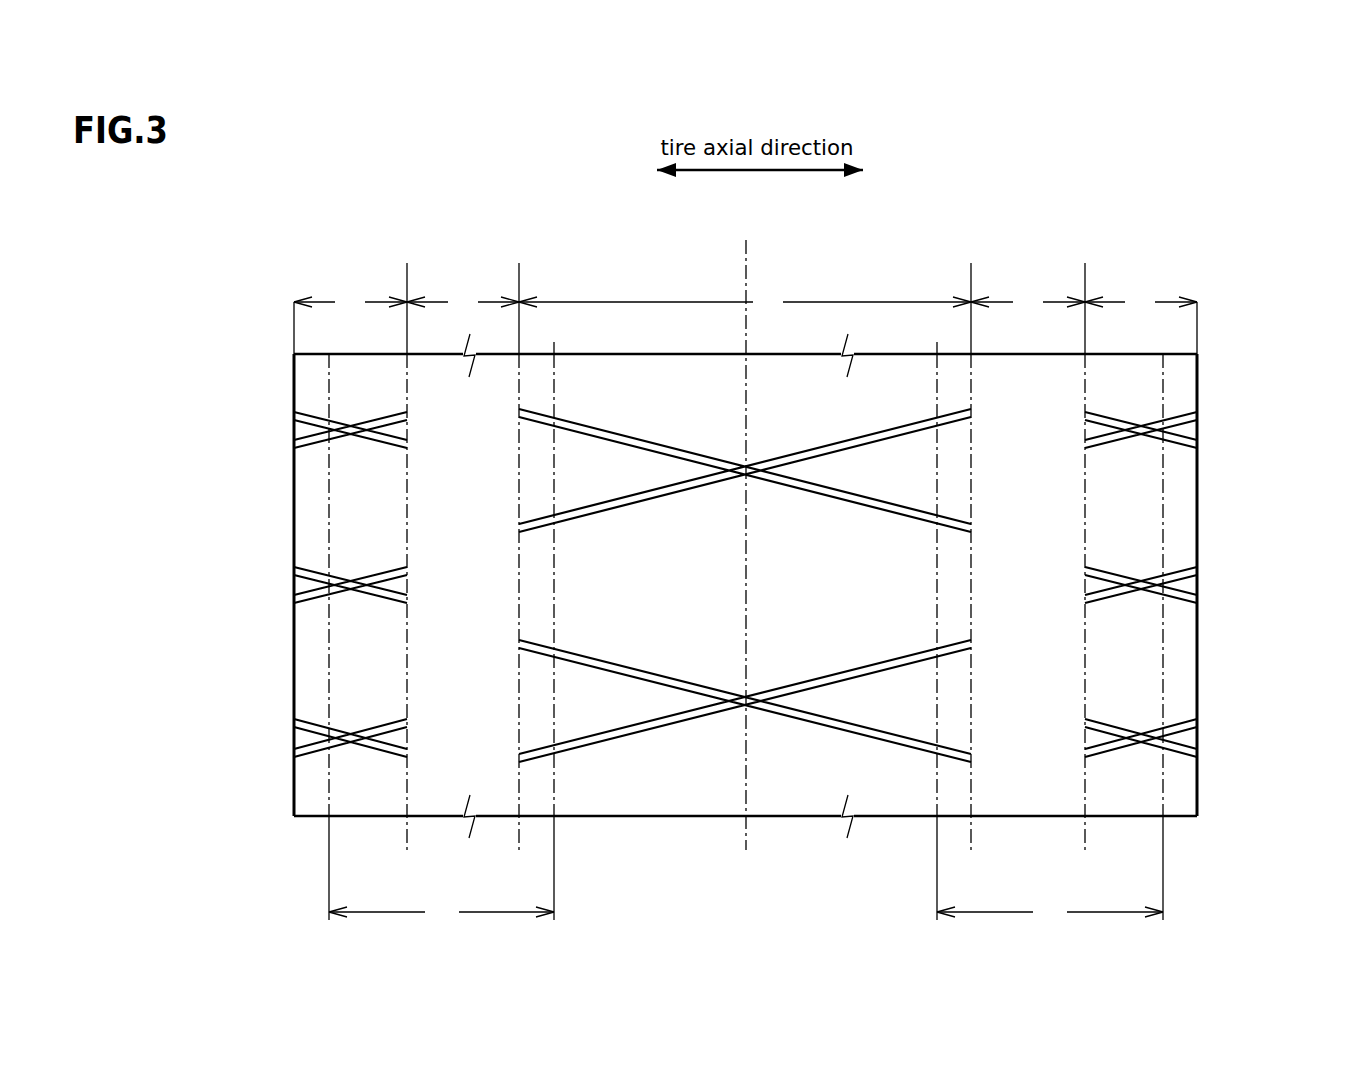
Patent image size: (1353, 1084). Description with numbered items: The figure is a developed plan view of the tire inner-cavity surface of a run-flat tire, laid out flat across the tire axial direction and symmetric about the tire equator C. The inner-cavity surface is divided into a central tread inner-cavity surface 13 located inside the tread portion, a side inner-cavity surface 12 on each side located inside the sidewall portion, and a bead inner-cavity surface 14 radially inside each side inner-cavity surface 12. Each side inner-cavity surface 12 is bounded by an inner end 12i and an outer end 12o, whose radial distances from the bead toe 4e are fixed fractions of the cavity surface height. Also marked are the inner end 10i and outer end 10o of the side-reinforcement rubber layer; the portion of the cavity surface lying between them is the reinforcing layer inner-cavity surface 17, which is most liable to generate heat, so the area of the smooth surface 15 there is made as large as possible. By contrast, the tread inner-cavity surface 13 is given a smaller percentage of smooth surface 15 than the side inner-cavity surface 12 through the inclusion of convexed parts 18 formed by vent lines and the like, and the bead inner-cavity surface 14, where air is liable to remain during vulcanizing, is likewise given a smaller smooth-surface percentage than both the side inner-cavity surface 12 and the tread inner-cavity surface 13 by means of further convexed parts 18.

The bead toe 4e is at (294, 617).
The tire equator C is at (746, 530).
The inner end of the side-reinforcement rubber layer 10i is at (1163, 777).
The outer end of the side-reinforcement rubber layer 10o is at (555, 768).
The side inner-cavity surface 12 is at (746, 303).
The inner end of the side inner-cavity surface 12i is at (405, 282).
The outer end of the side inner-cavity surface 12o is at (518, 282).
The tread inner-cavity surface 13 is at (745, 303).
The bead inner-cavity surface 14 is at (745, 303).
The smooth surface 15 is at (342, 517).
The reinforcing layer inner-cavity surface 17 is at (746, 871).
The convexed parts 18 is at (364, 439).